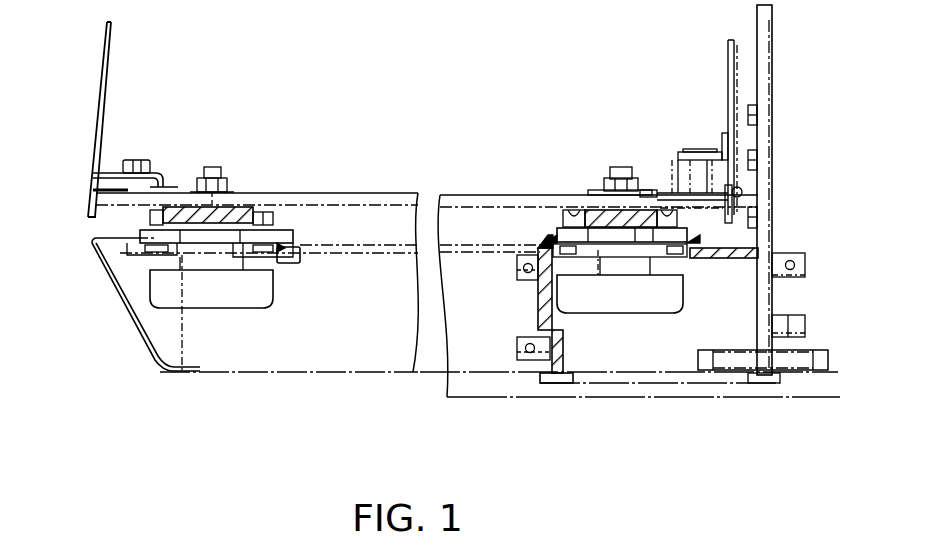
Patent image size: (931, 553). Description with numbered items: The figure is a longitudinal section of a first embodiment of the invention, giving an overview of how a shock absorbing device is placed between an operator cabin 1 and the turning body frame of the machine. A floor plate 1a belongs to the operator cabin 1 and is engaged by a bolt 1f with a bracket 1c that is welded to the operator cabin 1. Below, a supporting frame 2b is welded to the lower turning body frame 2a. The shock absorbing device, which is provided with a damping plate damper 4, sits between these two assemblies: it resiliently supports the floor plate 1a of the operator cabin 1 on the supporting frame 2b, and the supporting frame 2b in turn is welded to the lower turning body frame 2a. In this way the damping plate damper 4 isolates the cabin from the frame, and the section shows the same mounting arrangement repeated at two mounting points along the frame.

The operator cabin 1 is at (108, 50).
The floor plate 1a is at (318, 193).
The bracket 1c is at (165, 183).
The bolt 1f is at (138, 158).
The lower turning body frame 2a is at (123, 306).
The supporting frame 2b is at (282, 228).
The damping plate damper 4 is at (232, 310).